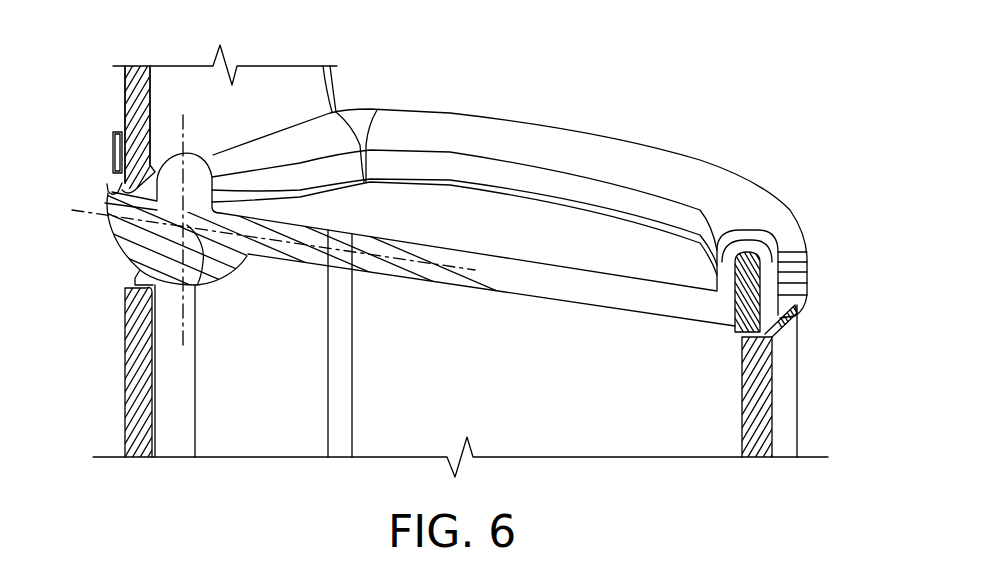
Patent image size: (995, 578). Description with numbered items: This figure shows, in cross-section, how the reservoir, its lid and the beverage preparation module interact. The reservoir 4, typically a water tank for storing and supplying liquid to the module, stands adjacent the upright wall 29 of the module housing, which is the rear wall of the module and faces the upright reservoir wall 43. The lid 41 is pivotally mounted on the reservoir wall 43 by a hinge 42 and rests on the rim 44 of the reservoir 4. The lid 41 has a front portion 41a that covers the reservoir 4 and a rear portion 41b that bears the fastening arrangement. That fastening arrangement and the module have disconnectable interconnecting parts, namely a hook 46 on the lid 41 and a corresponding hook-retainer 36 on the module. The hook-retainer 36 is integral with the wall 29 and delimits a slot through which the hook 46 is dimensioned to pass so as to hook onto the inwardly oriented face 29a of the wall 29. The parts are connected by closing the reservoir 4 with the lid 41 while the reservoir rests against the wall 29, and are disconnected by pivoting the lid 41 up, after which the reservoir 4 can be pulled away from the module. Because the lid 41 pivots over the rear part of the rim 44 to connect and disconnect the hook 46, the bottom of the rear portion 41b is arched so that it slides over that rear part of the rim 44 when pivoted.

The reservoir 4 is at (763, 403).
The upright wall 29 is at (190, 76).
The inwardly oriented face 29a is at (128, 100).
The hook-retainer 36 is at (126, 298).
The lid 41 is at (776, 278).
The front portion 41a is at (645, 240).
The rear portion 41b is at (133, 235).
The hinge 42 is at (188, 228).
The reservoir wall 43 is at (308, 335).
The rim 44 is at (783, 331).
The hook 46 is at (108, 190).